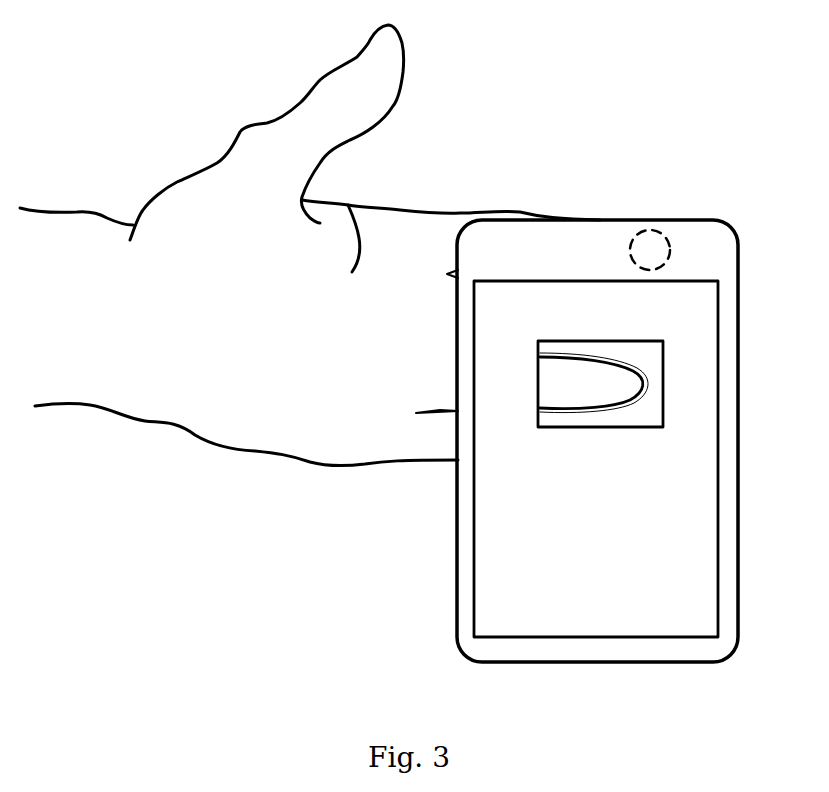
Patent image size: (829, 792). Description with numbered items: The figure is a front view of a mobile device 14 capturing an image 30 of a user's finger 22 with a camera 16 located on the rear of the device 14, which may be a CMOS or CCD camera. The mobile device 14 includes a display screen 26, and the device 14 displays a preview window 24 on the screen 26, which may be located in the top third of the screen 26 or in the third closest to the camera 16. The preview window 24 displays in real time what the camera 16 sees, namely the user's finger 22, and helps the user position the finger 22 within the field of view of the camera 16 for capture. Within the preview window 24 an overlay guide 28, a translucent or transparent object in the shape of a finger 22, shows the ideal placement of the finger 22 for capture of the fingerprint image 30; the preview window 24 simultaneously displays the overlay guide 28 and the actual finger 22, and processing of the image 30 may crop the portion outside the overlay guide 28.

The mobile device 14 is at (528, 243).
The camera 16 is at (666, 243).
The user's finger 22 is at (462, 220).
The preview window 24 is at (609, 350).
The display screen 26 is at (700, 318).
The overlay guide 28 is at (640, 369).
The fingerprint image 30 is at (627, 388).